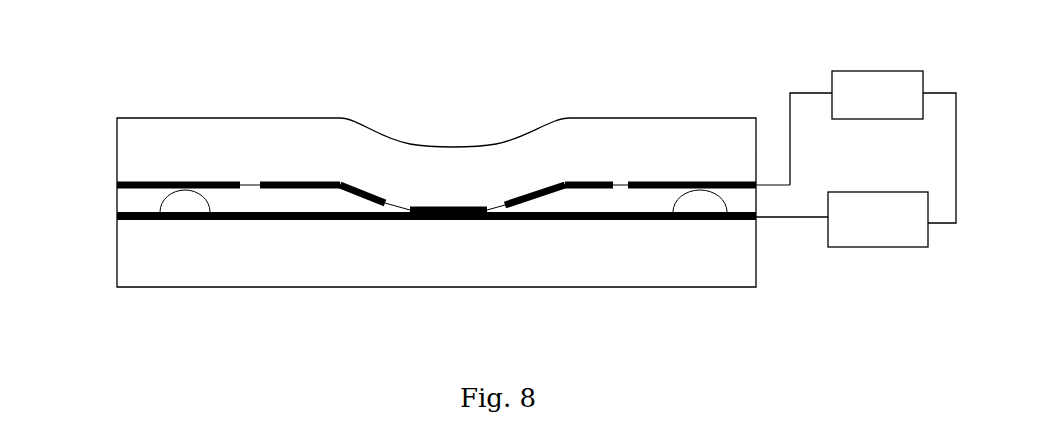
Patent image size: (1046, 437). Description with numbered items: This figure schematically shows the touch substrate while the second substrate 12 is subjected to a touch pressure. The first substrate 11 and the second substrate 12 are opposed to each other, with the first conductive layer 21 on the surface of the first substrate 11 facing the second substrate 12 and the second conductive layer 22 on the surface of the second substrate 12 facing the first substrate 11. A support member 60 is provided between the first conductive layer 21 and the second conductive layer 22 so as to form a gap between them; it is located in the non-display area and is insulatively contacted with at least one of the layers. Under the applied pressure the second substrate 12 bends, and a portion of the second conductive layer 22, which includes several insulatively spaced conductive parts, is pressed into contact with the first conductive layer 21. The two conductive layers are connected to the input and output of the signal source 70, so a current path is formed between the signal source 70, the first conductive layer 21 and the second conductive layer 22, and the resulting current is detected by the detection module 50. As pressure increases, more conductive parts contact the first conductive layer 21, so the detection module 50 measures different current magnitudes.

The first substrate 11 is at (195, 263).
The second substrate 12 is at (207, 126).
The first conductive layer 21 is at (118, 218).
The second conductive layer 22 is at (118, 186).
The support member 60 is at (165, 203).
The signal source 70 is at (885, 70).
The detection module 50 is at (888, 248).